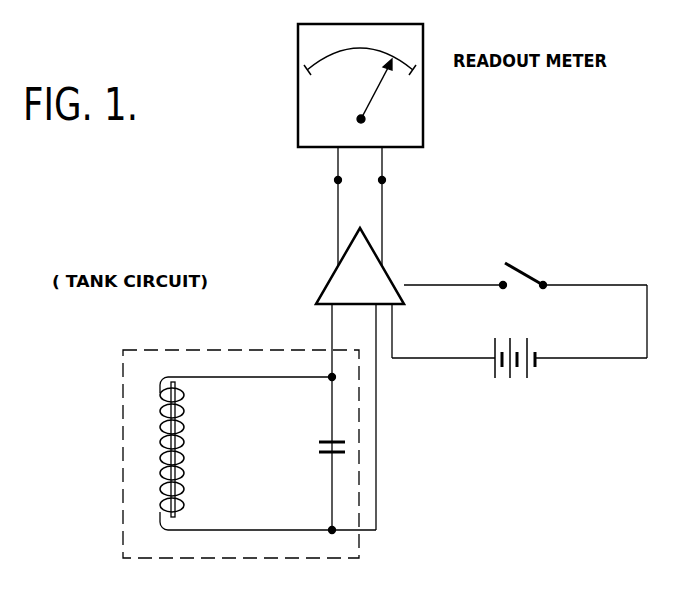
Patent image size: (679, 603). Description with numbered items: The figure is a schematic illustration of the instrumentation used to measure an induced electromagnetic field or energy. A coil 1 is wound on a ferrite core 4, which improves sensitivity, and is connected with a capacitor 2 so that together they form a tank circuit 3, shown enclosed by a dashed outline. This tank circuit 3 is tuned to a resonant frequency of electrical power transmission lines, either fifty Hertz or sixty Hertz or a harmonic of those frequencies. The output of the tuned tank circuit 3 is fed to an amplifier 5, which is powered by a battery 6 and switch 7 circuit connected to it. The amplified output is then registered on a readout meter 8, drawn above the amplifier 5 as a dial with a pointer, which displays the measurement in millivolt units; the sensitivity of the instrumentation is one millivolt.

The coil 1 is at (178, 479).
The capacitor 2 is at (319, 446).
The tank circuit 3 is at (165, 357).
The ferrite core 4 is at (178, 384).
The amplifier 5 is at (342, 265).
The battery 6 is at (519, 377).
The switch 7 is at (527, 266).
The readout meter 8 is at (311, 47).